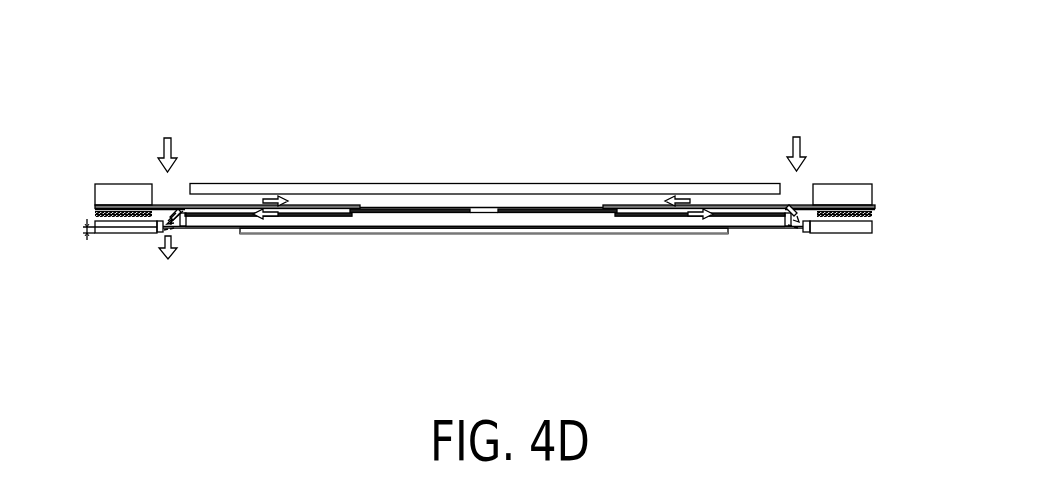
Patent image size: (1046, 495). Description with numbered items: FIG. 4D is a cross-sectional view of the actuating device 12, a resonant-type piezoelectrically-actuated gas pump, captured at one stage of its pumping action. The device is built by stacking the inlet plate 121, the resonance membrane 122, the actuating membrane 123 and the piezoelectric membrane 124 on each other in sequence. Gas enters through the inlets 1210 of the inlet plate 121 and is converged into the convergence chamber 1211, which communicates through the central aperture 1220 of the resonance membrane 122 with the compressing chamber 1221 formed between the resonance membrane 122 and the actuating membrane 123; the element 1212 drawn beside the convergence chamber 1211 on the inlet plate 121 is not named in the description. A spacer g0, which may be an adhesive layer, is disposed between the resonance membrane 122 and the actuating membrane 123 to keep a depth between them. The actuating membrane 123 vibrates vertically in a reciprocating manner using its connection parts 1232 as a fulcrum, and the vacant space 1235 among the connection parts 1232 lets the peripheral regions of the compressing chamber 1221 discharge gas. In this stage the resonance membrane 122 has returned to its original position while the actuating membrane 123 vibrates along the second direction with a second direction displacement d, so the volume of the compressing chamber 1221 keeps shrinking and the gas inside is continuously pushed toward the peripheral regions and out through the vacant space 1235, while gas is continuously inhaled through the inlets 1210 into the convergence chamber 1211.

The actuating device 12 is at (918, 41).
The inlet plate 121 is at (835, 197).
The resonance membrane 122 is at (408, 206).
The actuating membrane 123 is at (862, 229).
The piezoelectric membrane 124 is at (501, 233).
The inlets 1210 is at (788, 206).
The convergence chamber 1211 is at (555, 208).
The second electrode segment 1212 is at (655, 208).
The central aperture 1220 is at (484, 209).
The compressing chamber 1221 is at (577, 218).
The connection parts 1232 is at (173, 221).
The vacant space 1235 is at (175, 232).
The spacer g0 is at (874, 213).
The second direction displacement d is at (73, 224).